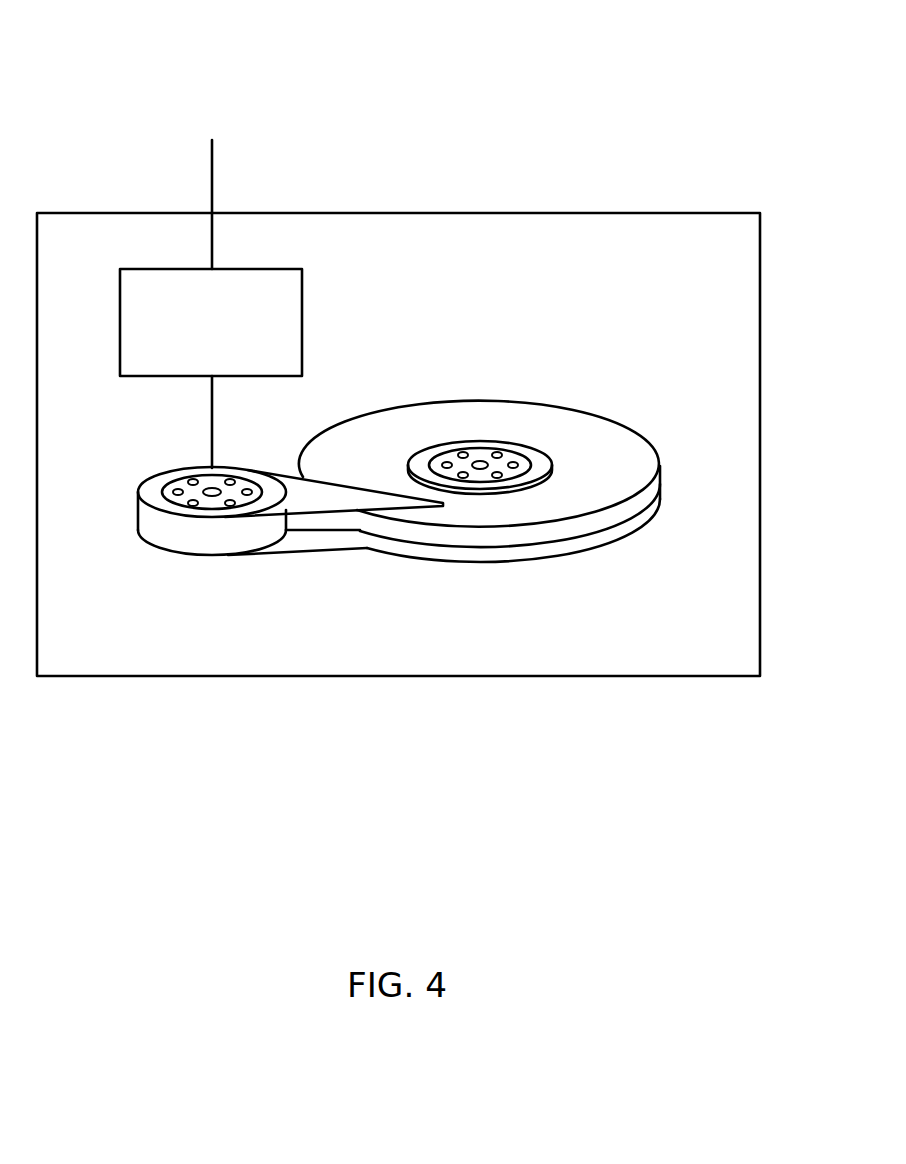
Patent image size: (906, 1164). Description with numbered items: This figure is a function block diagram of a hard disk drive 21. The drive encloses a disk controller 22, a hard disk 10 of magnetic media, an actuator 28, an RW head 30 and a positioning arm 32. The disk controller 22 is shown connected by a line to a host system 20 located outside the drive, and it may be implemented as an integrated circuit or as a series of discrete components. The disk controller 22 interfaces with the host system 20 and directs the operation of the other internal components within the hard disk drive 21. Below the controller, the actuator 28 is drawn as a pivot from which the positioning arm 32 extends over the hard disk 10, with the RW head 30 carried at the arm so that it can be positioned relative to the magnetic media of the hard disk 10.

The hard disk 10 is at (648, 447).
The host system 20 is at (210, 170).
The hard disk drive 21 is at (596, 119).
The disk controller 22 is at (227, 368).
The actuator 28 is at (147, 477).
The RW head 30 is at (420, 500).
The positioning arm 32 is at (297, 477).